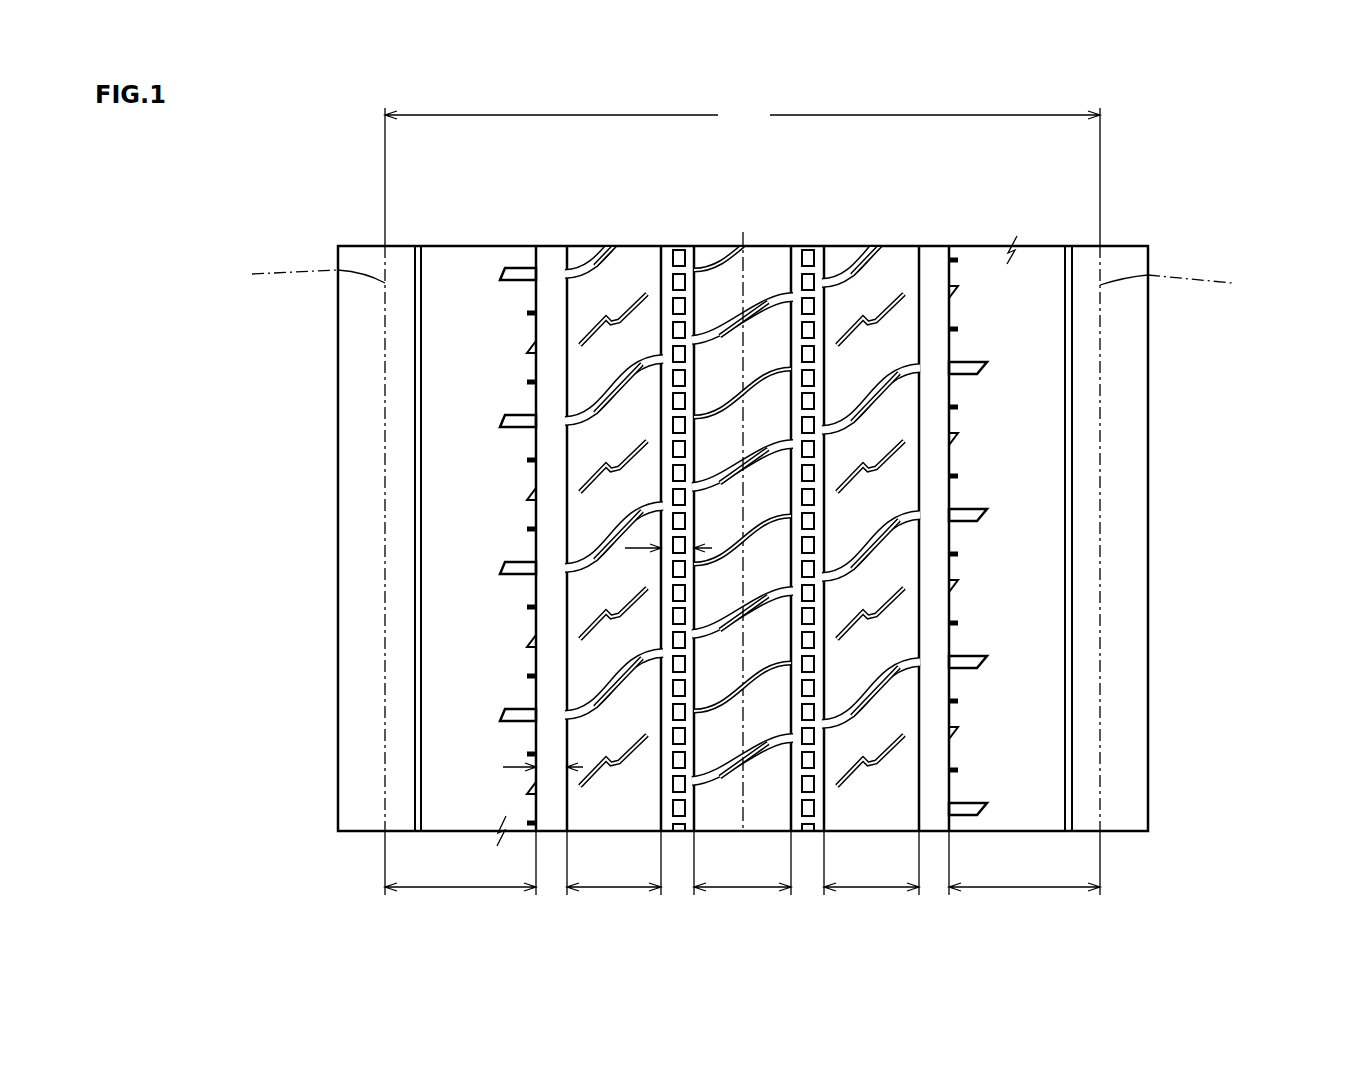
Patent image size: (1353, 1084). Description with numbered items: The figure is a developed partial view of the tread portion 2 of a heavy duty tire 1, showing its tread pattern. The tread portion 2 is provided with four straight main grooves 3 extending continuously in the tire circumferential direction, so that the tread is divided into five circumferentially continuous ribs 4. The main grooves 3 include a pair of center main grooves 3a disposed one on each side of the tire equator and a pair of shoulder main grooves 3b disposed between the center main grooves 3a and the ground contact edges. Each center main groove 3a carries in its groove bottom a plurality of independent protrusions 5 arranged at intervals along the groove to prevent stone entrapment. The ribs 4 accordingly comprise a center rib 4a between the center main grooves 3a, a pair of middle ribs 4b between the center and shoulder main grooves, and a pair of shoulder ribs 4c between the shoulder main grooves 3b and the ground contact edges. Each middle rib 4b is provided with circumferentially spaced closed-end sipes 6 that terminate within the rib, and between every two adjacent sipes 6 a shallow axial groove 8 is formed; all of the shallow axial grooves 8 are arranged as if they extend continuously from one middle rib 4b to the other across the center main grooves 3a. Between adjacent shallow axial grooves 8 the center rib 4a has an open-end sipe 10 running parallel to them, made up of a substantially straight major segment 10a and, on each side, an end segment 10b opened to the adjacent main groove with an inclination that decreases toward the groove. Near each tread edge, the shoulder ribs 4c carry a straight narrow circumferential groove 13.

The heavy duty tire 1 is at (752, 519).
The tread portion 2 is at (1131, 229).
The main grooves 3 is at (740, 478).
The center main grooves 3a is at (671, 259).
The shoulder main grooves 3b is at (554, 276).
The ribs 4 is at (752, 505).
The center rib 4a is at (716, 276).
The middle ribs 4b is at (624, 269).
The shoulder ribs 4c is at (451, 267).
The protrusions 5 is at (672, 725).
The sipes 6 is at (580, 318).
The shallow axial groove 8 is at (597, 378).
The open-end sipe 10 is at (779, 353).
The major segment 10a is at (757, 773).
The end segment 10b is at (715, 705).
The narrow circumferential groove 13 is at (412, 407).